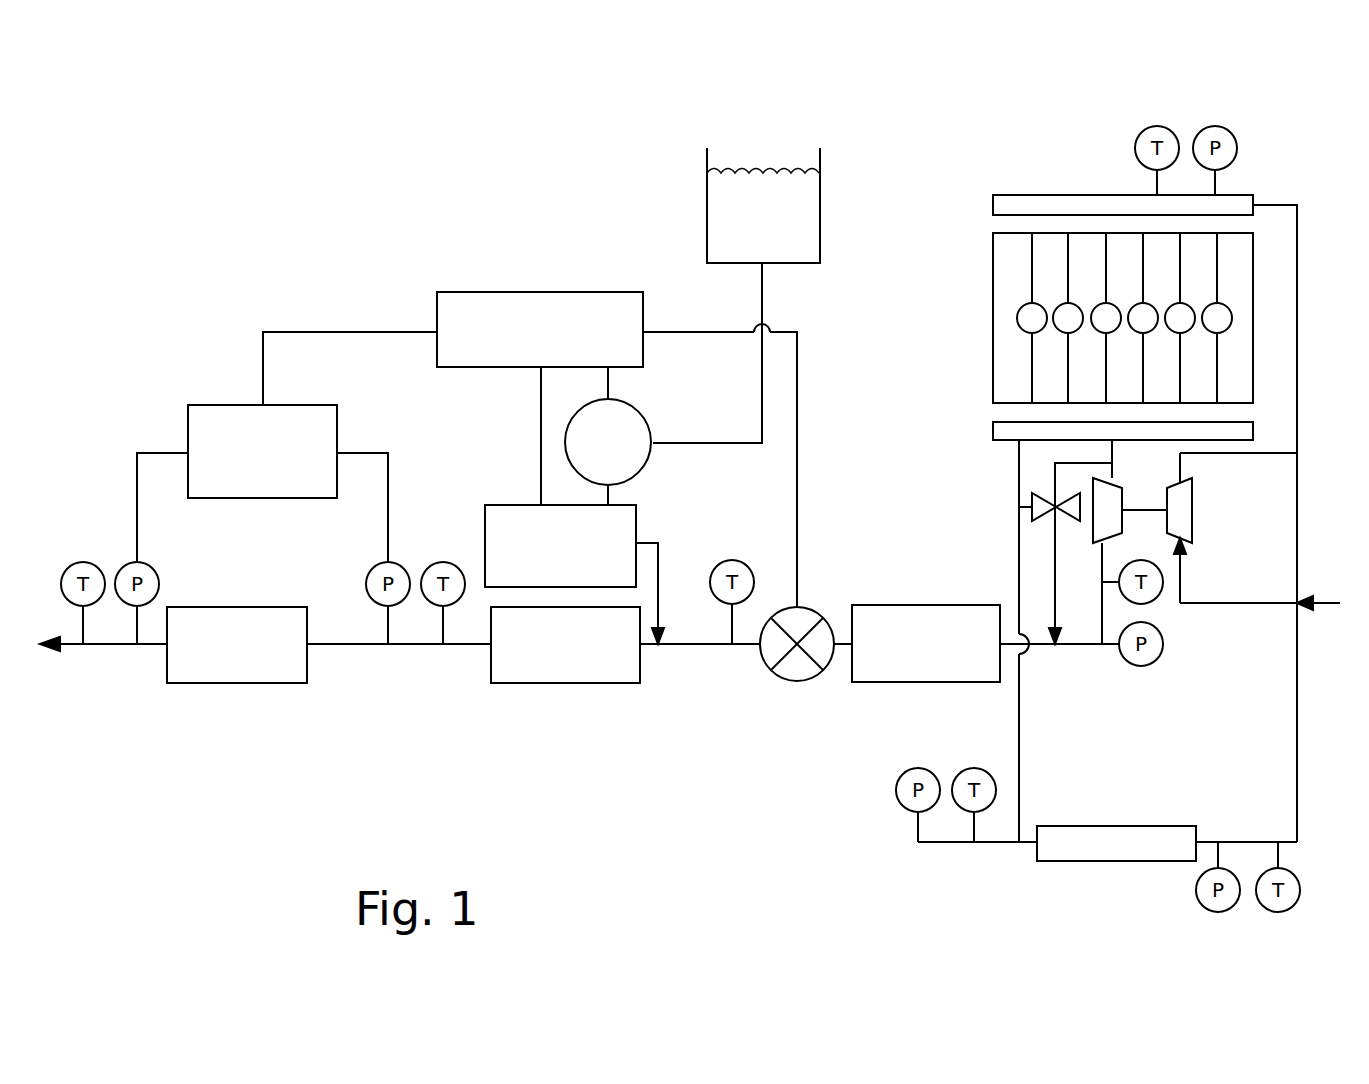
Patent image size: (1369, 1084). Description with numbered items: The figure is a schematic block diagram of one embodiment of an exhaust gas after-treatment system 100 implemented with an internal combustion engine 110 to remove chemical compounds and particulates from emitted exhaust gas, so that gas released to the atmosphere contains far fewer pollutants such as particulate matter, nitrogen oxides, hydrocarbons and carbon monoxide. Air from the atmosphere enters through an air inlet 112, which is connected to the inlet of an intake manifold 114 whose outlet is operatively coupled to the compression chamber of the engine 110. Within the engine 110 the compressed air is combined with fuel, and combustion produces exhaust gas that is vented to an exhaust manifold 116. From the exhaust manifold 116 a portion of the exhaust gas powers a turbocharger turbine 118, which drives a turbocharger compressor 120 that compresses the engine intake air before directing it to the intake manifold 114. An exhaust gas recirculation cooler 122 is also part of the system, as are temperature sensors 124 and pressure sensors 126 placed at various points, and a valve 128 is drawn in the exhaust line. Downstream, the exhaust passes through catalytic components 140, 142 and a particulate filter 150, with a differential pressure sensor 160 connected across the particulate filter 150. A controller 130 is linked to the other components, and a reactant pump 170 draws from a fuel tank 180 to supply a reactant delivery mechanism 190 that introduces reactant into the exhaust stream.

The exhaust gas after-treatment system 100 is at (208, 156).
The internal combustion engine 110 is at (1245, 315).
The air inlet 112 is at (1337, 610).
The intake manifold 114 is at (1063, 195).
The exhaust manifold 116 is at (1150, 440).
The turbocharger turbine 118 is at (1096, 543).
The turbocharger compressor 120 is at (1192, 510).
The exhaust gas recirculation (EGR) cooler 122 is at (1111, 861).
The temperature sensors 124 is at (1141, 132).
The pressure sensors 126 is at (1237, 148).
The valve 128 is at (823, 670).
The controller 130 is at (530, 449).
The catalytic component 140 is at (930, 682).
The catalytic component 142 is at (566, 683).
The particulate filter 150 is at (237, 607).
The differential pressure sensor 160 is at (231, 405).
The reactant pump 170 is at (608, 452).
The fuel tank 180 is at (707, 210).
The reactant delivery mechanism 190 is at (506, 505).